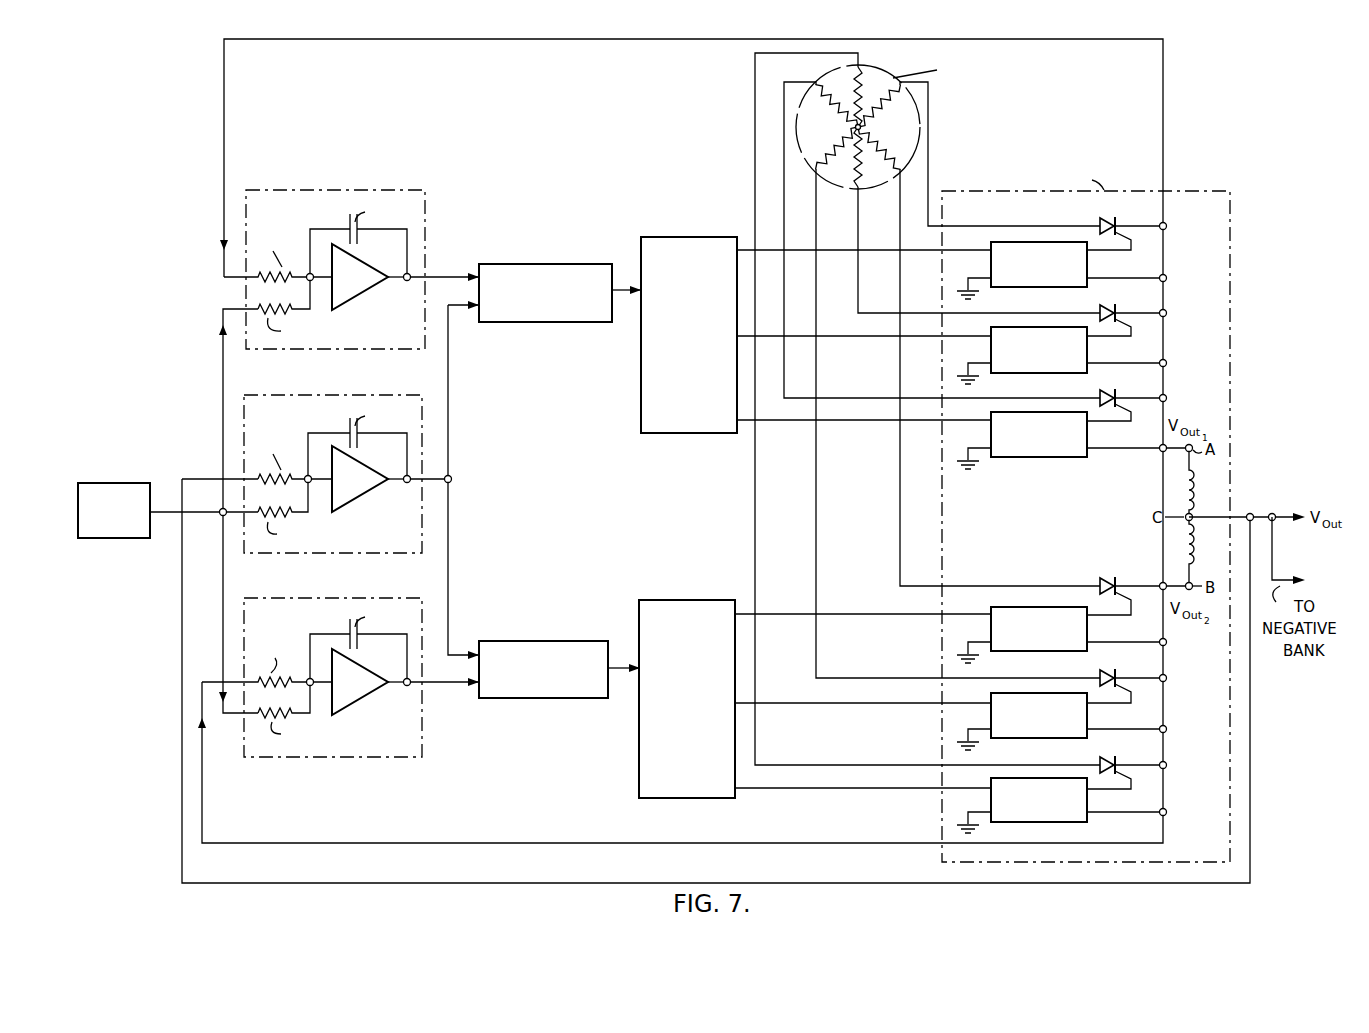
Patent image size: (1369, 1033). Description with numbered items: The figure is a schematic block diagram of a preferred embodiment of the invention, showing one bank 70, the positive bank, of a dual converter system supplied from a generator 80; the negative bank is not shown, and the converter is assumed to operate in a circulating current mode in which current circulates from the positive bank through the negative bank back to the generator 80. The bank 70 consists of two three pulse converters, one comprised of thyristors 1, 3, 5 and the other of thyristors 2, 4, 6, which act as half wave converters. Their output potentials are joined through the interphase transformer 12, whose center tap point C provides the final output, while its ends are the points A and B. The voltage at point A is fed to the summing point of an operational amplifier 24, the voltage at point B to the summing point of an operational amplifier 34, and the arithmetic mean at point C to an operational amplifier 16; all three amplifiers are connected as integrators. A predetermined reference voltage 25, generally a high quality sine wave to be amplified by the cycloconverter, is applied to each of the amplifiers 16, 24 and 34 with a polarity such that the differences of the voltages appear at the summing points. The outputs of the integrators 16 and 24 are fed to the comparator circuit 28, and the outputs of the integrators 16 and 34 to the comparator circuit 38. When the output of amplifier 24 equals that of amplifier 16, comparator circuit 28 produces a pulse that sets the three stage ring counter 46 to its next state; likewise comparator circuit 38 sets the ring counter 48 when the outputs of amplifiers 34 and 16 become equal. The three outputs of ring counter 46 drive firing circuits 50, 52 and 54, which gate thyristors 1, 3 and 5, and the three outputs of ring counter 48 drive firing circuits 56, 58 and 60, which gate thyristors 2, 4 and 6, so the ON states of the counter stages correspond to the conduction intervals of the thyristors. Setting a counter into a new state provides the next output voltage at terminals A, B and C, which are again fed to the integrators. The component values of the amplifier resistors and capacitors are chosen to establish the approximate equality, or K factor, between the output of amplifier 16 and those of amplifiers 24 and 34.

The thyristor 1 is at (1108, 218).
The thyristor 2 is at (1108, 578).
The thyristor 3 is at (1108, 305).
The thyristor 4 is at (1108, 670).
The thyristor 5 is at (1108, 390).
The thyristor 6 is at (1108, 757).
The interphase transformer 12 is at (1193, 501).
The operational amplifier 16 is at (412, 395).
The operational amplifier 24 is at (427, 234).
The reference voltage 25 is at (103, 483).
The comparator circuit 28 is at (582, 264).
The operational amplifier 34 is at (422, 738).
The comparator circuit 38 is at (577, 641).
The ring counter 46 is at (688, 237).
The ring counter 48 is at (684, 600).
The firing circuit 50 is at (1036, 290).
The firing circuit 52 is at (1036, 375).
The firing circuit 54 is at (1036, 460).
The firing circuit 56 is at (1036, 654).
The firing circuit 58 is at (1036, 741).
The firing circuit 60 is at (1036, 824).
The bank 70 is at (1212, 191).
The generator 80 is at (883, 74).